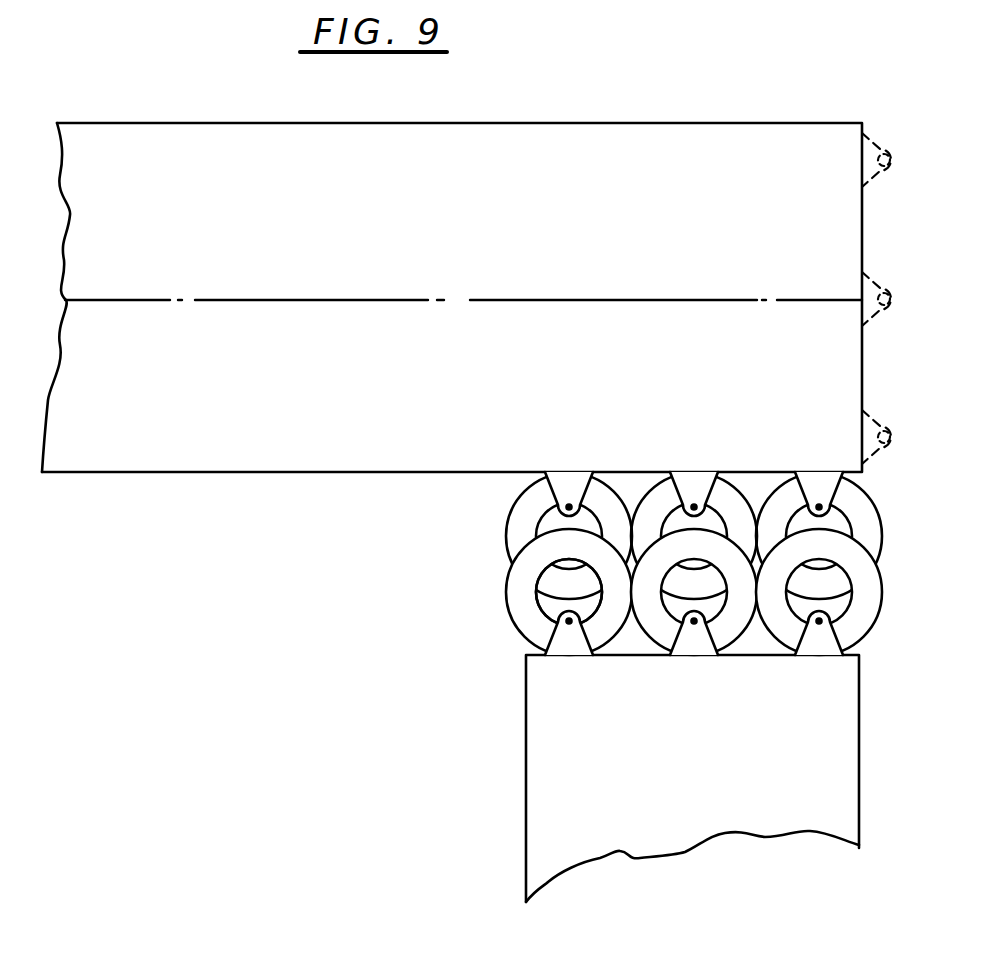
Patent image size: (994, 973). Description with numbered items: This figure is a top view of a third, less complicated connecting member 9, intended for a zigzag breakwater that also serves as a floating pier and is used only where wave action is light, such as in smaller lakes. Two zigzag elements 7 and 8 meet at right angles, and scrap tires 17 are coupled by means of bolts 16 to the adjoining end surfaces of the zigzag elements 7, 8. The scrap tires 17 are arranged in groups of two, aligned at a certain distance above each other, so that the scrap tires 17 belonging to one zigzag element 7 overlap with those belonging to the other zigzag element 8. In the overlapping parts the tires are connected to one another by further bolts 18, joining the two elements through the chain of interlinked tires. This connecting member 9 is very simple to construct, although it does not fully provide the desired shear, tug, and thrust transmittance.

The zigzag element 7 is at (746, 123).
The zigzag element 8 is at (538, 729).
The connecting member 9 is at (632, 563).
The bolt 16 is at (569, 506).
The scrap tire 17 is at (524, 563).
The bolt 18 is at (546, 580).